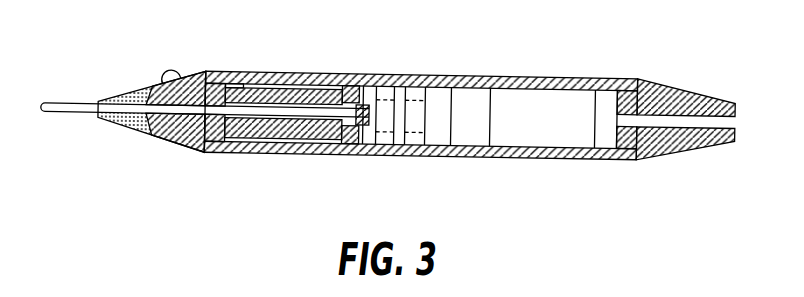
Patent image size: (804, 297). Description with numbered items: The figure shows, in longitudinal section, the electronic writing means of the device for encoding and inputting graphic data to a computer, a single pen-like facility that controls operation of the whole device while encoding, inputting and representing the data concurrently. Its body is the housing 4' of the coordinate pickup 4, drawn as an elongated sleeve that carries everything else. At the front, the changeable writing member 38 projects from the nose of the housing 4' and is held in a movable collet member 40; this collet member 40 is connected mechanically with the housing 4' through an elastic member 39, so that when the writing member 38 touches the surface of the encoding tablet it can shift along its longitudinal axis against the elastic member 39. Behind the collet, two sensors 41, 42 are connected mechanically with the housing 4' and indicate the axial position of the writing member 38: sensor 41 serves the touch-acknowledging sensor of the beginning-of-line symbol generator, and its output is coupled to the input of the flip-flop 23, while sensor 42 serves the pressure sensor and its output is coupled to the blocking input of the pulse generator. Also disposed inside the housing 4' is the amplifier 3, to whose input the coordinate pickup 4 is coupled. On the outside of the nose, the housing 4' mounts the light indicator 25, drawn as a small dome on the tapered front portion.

The amplifier 3 is at (555, 95).
The coordinate pickup 4 is at (151, 127).
The housing 4' is at (421, 91).
The flip-flop 23 is at (465, 96).
The light indicator 25 is at (166, 76).
The changeable writing member 38 is at (55, 110).
The elastic member 39 is at (297, 140).
The movable collet member 40 is at (232, 134).
The sensor 41 is at (388, 138).
The sensor 42 is at (418, 138).